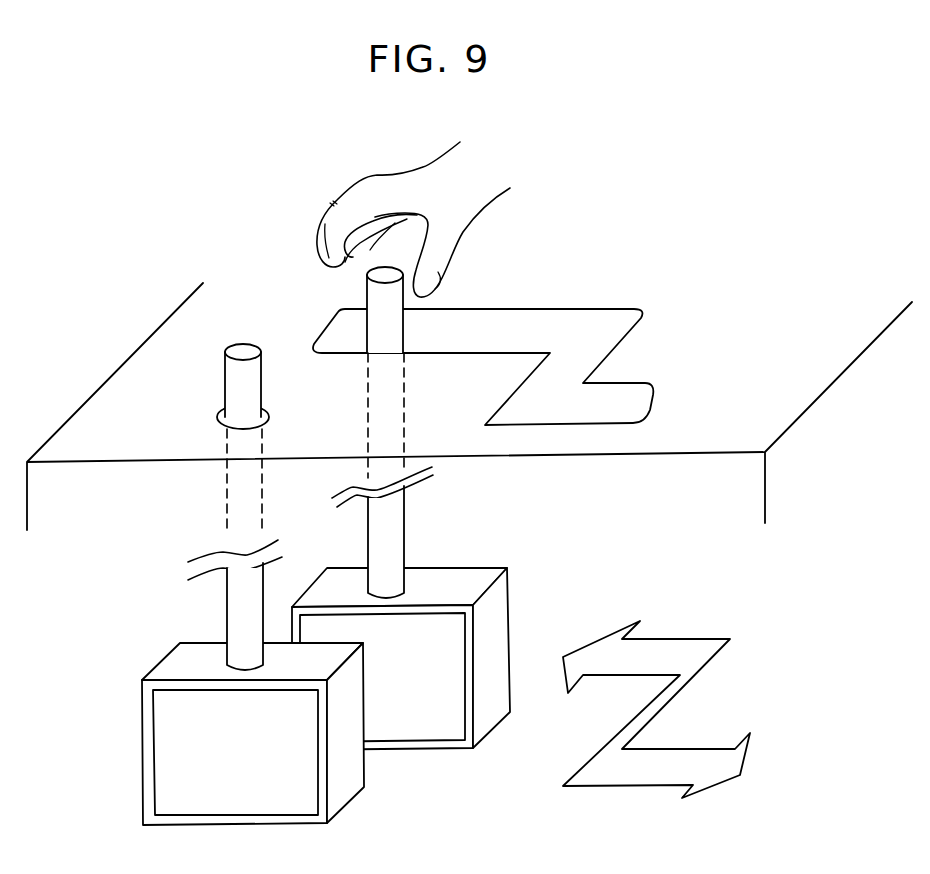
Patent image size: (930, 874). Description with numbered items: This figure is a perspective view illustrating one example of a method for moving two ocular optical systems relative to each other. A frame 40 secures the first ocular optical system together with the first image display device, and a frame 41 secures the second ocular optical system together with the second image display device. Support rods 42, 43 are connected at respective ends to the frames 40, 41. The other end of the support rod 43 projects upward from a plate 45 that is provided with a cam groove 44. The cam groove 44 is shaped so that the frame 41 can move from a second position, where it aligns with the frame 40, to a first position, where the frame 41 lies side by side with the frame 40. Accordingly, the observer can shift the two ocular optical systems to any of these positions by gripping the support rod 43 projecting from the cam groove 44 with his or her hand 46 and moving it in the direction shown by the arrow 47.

The frame 40 is at (352, 780).
The frame 41 is at (497, 607).
The support rod 42 is at (228, 377).
The support rod 43 is at (375, 292).
The cam groove 44 is at (518, 325).
The plate 45 is at (747, 367).
The hand 46 is at (460, 190).
The arrow 47 is at (698, 658).